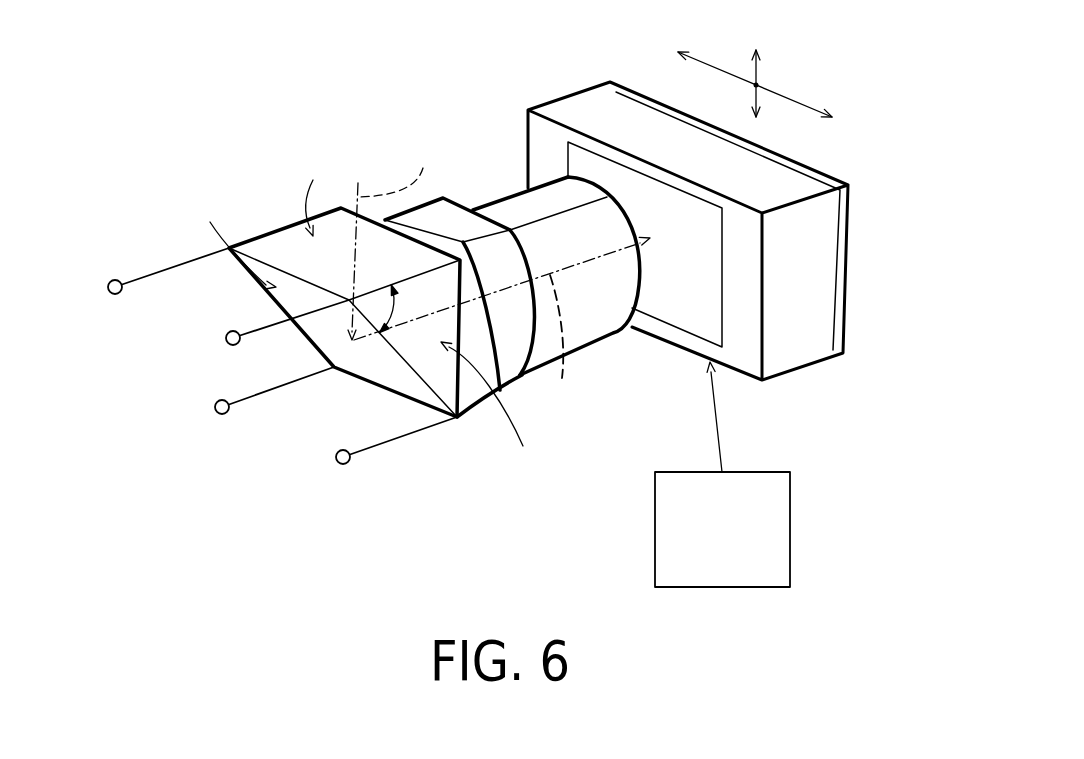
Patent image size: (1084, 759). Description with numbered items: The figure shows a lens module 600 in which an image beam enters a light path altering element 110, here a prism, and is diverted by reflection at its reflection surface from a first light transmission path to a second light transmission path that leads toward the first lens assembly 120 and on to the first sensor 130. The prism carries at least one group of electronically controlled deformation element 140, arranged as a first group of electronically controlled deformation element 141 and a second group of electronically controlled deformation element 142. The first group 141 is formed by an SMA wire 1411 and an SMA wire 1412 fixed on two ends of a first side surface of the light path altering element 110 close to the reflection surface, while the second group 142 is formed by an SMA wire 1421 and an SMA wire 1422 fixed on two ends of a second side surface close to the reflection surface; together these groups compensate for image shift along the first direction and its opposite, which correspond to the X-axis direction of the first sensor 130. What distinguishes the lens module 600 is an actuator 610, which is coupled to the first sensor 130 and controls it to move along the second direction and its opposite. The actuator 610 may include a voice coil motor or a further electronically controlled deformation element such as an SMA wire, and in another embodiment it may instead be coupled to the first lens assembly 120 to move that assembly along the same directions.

The lens module 600 is at (915, 657).
The light path altering element 110 is at (444, 386).
The first lens assembly 120 is at (597, 330).
The first sensor 130 is at (798, 340).
The electronically controlled deformation element 140 is at (272, 419).
The first group of electronically controlled deformation element 141 is at (211, 419).
The second group of electronically controlled deformation element 142 is at (341, 445).
The SMA wire 1411 is at (144, 278).
The SMA wire 1412 is at (252, 397).
The SMA wire 1421 is at (278, 322).
The SMA wire 1422 is at (396, 474).
The actuator 610 is at (791, 516).